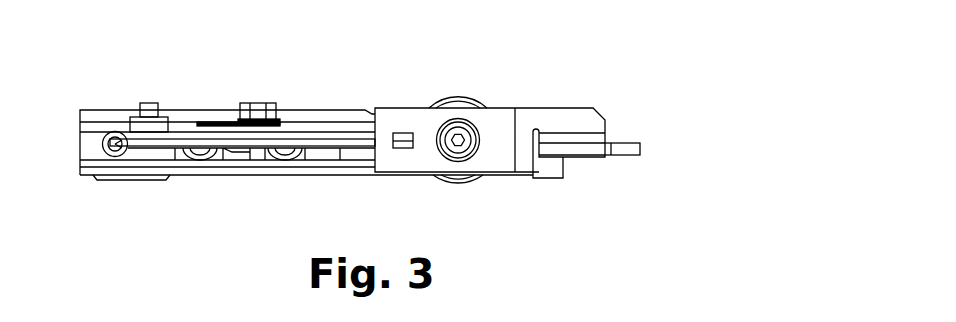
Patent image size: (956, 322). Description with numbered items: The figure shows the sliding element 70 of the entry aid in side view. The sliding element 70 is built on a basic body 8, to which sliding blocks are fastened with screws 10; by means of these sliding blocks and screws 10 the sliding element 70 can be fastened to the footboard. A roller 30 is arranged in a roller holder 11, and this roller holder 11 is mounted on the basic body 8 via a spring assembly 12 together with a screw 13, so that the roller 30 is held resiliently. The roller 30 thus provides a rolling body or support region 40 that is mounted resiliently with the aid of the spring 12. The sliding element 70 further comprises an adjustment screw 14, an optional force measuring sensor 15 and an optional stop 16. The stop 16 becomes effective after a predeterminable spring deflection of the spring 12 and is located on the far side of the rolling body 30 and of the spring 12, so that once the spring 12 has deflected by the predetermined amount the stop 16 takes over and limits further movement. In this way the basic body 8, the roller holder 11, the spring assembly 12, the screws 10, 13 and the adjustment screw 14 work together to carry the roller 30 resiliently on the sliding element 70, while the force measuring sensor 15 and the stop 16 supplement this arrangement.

The basic body 8 is at (88, 166).
The screws 10 is at (104, 141).
The roller holder 11 is at (488, 152).
The spring assembly 12 is at (312, 143).
The screw 13 is at (148, 112).
The adjustment screw 14 is at (258, 112).
The force measuring sensor 15 is at (580, 148).
The stop 16 is at (148, 178).
The roller 30 is at (462, 105).
The support region 40 is at (458, 188).
The sliding element 70 is at (605, 72).